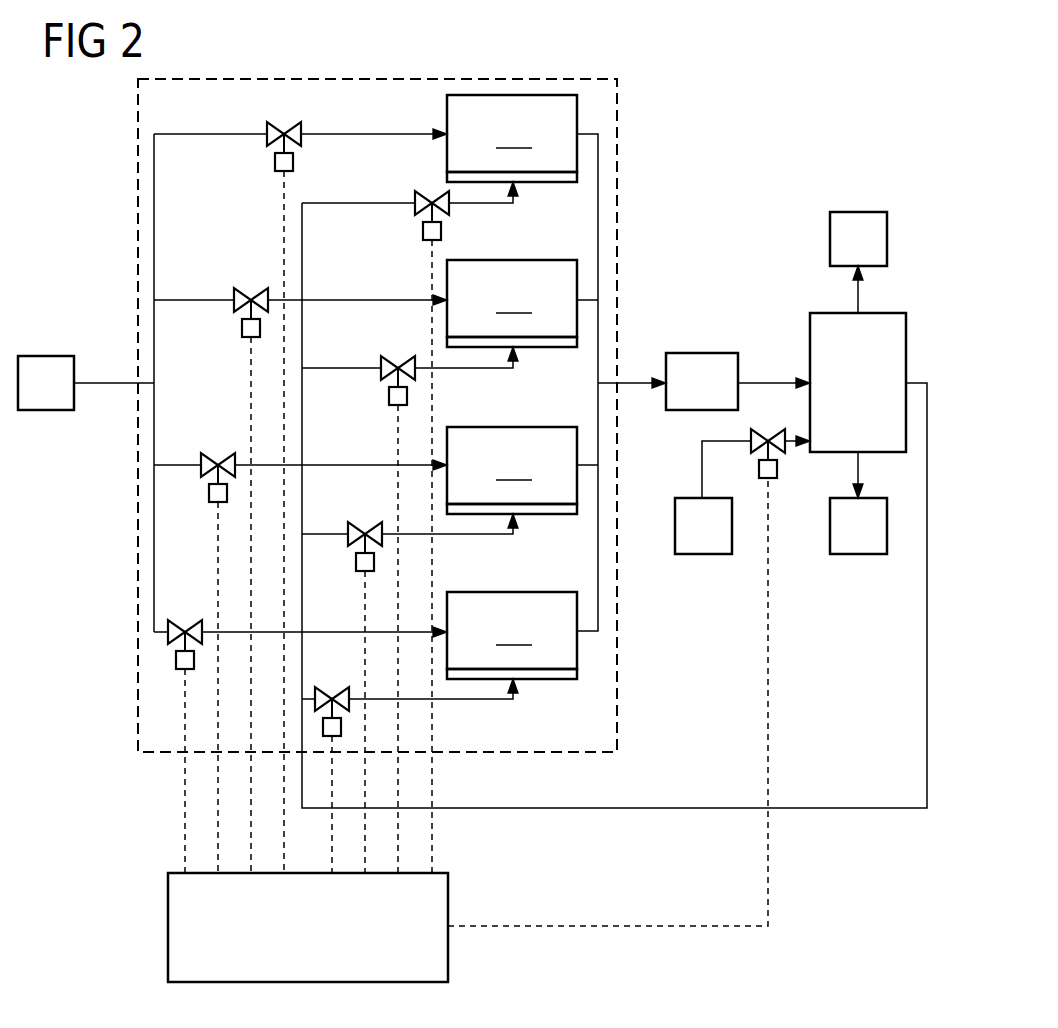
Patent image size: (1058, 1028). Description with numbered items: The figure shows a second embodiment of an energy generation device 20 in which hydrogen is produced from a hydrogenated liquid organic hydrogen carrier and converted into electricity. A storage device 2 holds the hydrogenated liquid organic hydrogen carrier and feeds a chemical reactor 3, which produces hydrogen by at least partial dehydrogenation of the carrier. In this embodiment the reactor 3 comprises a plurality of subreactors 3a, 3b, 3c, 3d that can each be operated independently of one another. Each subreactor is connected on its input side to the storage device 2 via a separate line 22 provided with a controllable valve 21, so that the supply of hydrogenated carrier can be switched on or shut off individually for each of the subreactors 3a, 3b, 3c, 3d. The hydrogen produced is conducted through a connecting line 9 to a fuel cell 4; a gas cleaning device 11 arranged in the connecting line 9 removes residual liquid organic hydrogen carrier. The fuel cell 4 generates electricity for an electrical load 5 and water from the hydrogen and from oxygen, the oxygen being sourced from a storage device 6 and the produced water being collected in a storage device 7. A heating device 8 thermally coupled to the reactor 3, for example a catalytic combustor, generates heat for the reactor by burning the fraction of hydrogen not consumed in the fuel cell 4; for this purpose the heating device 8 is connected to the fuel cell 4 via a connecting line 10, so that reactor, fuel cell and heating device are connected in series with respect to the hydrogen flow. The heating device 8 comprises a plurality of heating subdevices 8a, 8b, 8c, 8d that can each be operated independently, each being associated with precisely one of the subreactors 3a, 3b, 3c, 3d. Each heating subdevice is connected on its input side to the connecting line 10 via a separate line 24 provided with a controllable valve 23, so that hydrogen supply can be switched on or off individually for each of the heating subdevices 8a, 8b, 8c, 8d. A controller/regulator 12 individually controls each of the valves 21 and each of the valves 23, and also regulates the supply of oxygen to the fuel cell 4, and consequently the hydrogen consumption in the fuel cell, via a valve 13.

The storage device 2 is at (45, 356).
The chemical reactor 3 is at (378, 79).
The subreactor 3a is at (512, 133).
The subreactor 3b is at (512, 298).
The subreactor 3c is at (512, 465).
The subreactor 3d is at (512, 630).
The fuel cell 4 is at (906, 352).
The electrical load 5 is at (856, 212).
The storage device 6 is at (702, 554).
The storage device 7 is at (858, 554).
The heating device 8 is at (590, 121).
The heating subdevice 8a is at (553, 185).
The heating subdevice 8b is at (553, 350).
The heating subdevice 8c is at (553, 517).
The heating subdevice 8d is at (553, 682).
The connecting line 9 is at (772, 381).
The connecting line 10 is at (858, 808).
The gas cleaning device 11 is at (702, 353).
The controller/regulator 12 is at (168, 928).
The valve 13 is at (785, 447).
The energy generation device 20 is at (250, 62).
The controllable valve 21 is at (284, 124).
The line 22 is at (332, 134).
The controllable valve 23 is at (430, 194).
The line 24 is at (458, 205).